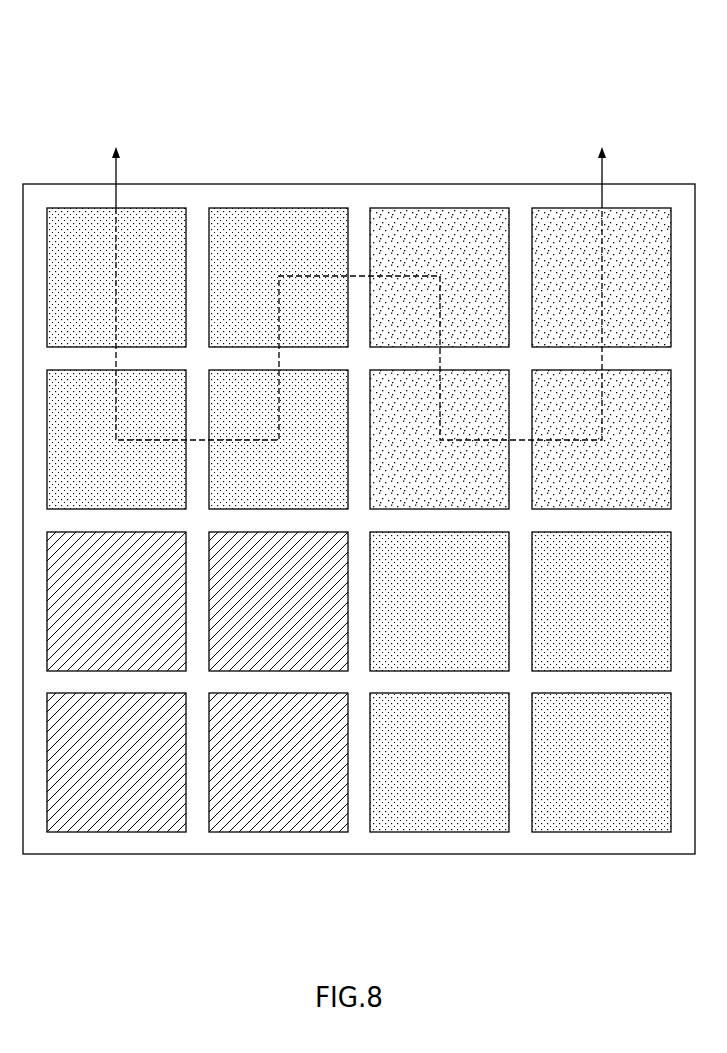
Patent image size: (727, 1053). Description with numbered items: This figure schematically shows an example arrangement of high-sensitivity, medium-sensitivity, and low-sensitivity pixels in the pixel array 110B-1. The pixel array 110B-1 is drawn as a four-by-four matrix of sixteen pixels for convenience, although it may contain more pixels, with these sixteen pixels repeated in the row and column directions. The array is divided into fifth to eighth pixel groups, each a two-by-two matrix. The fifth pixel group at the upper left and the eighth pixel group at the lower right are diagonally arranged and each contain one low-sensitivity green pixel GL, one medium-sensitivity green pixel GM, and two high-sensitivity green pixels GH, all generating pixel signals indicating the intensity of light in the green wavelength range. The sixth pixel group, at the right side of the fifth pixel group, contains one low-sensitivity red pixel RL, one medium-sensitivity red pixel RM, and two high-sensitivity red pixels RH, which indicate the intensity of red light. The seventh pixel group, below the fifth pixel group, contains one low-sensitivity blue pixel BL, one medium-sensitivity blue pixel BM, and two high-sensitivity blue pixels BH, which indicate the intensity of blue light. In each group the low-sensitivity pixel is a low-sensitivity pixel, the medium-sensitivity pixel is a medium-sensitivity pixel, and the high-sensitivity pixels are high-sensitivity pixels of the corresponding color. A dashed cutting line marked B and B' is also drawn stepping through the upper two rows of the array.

The pixel array 110B-1 is at (674, 50).
The low-sensitivity green pixel GL is at (278, 439).
The medium-sensitivity green pixel GM is at (440, 439).
The high-sensitivity green pixel GH is at (359, 601).
The low-sensitivity red pixel RL is at (439, 277).
The medium-sensitivity red pixel RM is at (601, 277).
The high-sensitivity red pixel RH is at (520, 439).
The low-sensitivity blue pixel BL is at (163, 601).
The medium-sensitivity blue pixel BM is at (278, 601).
The high-sensitivity blue pixel BH is at (244, 762).
The section line B is at (355, 280).
The section line B' is at (603, 164).